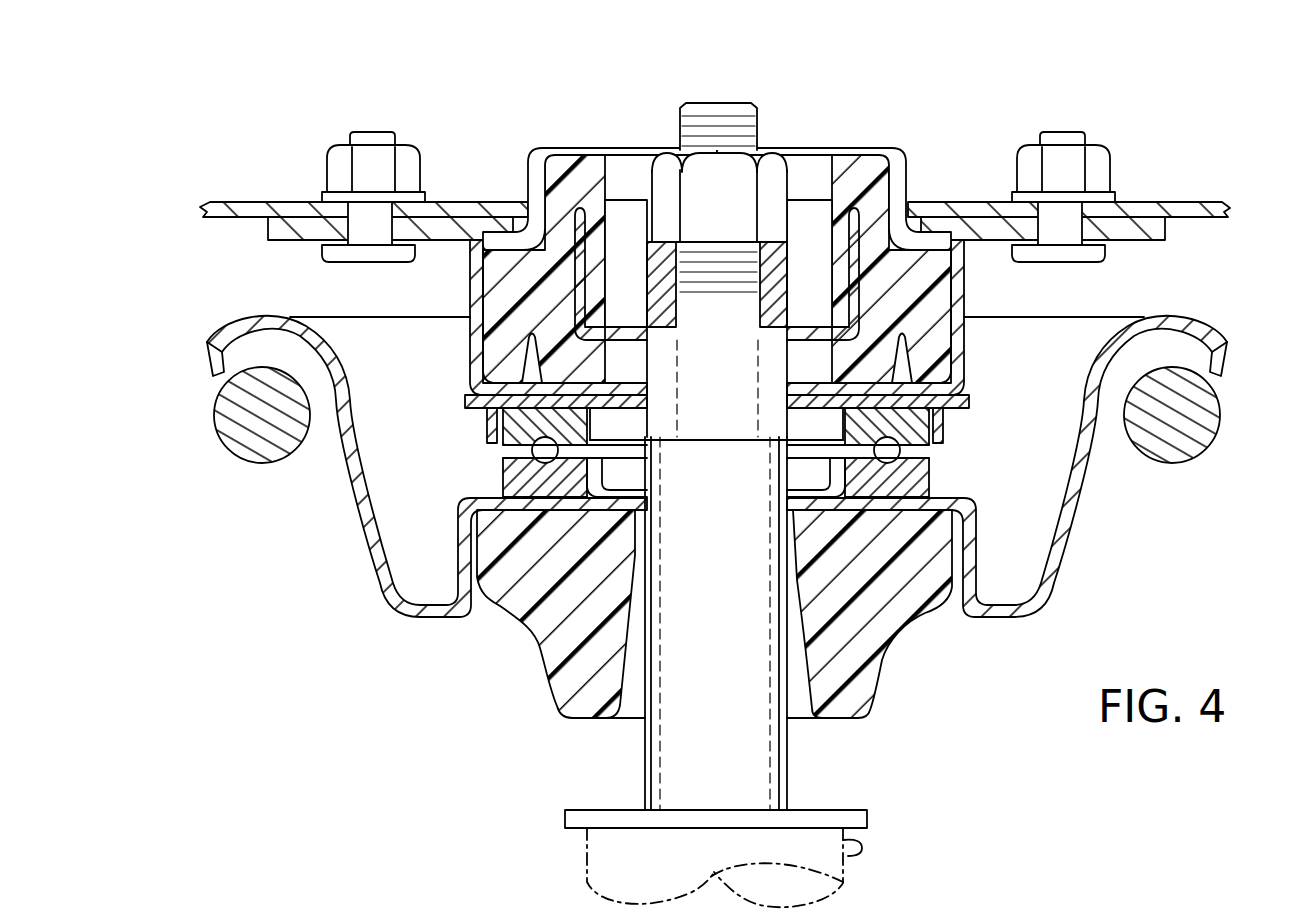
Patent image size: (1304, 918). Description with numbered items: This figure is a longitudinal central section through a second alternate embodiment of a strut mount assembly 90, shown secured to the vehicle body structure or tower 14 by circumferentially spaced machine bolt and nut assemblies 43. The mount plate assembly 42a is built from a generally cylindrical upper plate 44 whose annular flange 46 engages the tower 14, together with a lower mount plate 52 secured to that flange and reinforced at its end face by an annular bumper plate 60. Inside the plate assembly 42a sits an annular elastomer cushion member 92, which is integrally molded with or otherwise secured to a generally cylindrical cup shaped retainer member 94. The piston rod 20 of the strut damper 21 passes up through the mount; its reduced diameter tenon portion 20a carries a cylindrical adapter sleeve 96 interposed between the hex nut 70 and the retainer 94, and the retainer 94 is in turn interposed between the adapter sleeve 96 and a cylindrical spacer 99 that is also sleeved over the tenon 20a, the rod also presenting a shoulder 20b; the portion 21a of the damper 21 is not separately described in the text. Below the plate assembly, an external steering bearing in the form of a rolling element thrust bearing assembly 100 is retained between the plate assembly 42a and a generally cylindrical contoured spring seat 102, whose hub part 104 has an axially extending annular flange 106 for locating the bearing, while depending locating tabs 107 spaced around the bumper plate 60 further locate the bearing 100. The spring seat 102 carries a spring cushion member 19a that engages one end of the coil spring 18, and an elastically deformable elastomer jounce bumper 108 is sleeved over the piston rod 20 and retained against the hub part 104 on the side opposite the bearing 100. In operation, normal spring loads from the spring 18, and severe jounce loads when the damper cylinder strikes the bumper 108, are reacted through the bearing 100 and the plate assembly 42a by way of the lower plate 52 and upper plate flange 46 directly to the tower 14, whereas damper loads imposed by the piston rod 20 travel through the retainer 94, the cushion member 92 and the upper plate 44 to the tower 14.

The tower 14 is at (1185, 205).
The coil spring 18 is at (1198, 440).
The spring cushion member 19a is at (1212, 368).
The piston rod 20 is at (645, 712).
The tenon portion 20a is at (708, 106).
The shoulder 20b is at (730, 426).
The strut damper 21 is at (566, 847).
The blade tip 21a is at (862, 860).
The mount plate assembly 42a is at (548, 150).
The machine bolt and nut assemblies 43 is at (388, 133).
The upper plate 44 is at (882, 148).
The annular flange 46 is at (1135, 215).
The lower mount plate 52 is at (975, 243).
The bumper plate 60 is at (967, 400).
The hex nut 70 is at (667, 156).
The strut mount assembly 90 is at (717, 207).
The cushion member 92 is at (835, 200).
The retainer member 94 is at (583, 210).
The adapter sleeve 96 is at (795, 265).
The cylindrical spacer 99 is at (800, 365).
The rolling element thrust bearing assembly 100 is at (502, 453).
The spring seat 102 is at (1187, 322).
The hub part 104 is at (567, 506).
The annular flange 106 is at (832, 484).
The locating tabs 107 is at (947, 423).
The jounce bumper 108 is at (871, 692).